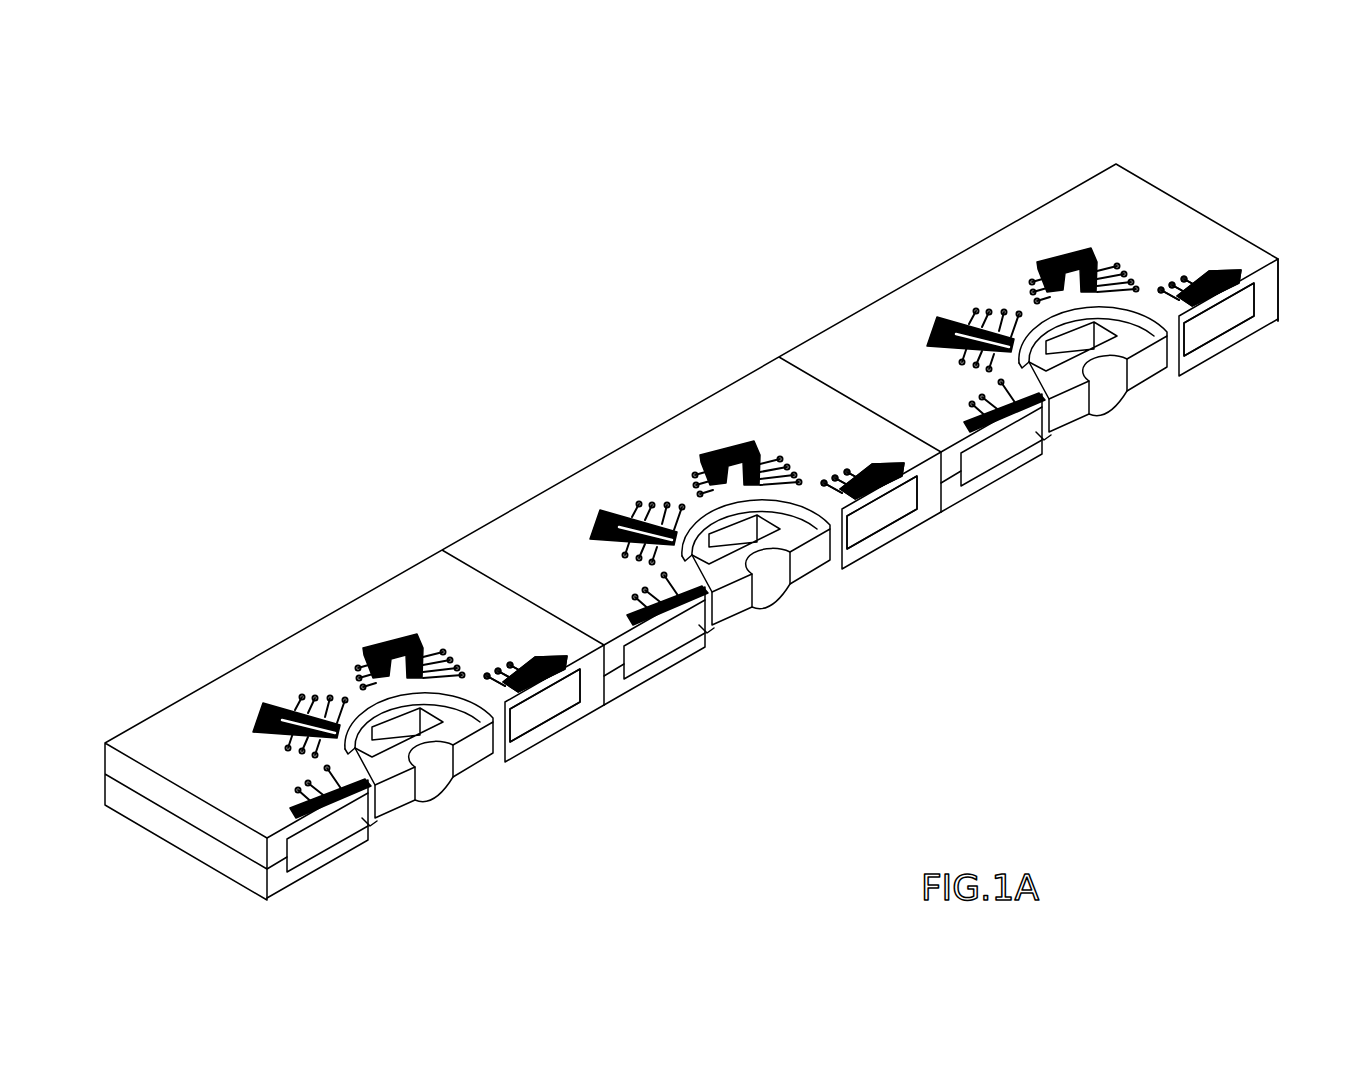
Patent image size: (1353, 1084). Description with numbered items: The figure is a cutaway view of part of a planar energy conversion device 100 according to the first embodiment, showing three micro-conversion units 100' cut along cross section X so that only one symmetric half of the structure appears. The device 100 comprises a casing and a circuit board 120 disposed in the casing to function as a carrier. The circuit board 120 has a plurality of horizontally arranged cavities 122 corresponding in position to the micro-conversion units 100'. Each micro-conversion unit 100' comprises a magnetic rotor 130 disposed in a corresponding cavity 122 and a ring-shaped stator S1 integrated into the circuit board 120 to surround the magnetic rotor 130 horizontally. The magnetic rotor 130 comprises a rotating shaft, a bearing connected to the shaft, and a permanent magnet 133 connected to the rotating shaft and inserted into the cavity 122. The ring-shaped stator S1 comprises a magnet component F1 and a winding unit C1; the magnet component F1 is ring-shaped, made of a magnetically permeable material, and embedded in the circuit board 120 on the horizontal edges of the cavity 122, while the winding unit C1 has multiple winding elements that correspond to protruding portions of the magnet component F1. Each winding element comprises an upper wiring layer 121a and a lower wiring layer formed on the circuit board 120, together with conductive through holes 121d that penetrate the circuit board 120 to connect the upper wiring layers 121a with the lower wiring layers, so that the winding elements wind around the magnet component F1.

The planar energy conversion device 100 is at (712, 493).
The micro-conversion unit 100' is at (723, 562).
The circuit board 120 is at (1152, 206).
The upper wiring layer 121a is at (258, 710).
The conductive through holes 121d is at (300, 694).
The cavity 122 is at (402, 812).
The magnetic rotor 130 is at (468, 760).
The permanent magnet 133 is at (1140, 375).
The winding unit C1 is at (567, 670).
The magnet component F1 is at (549, 716).
The ring-shaped stator S1 is at (587, 788).
The cross section X is at (1273, 277).